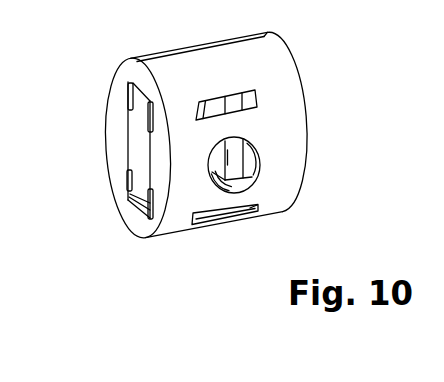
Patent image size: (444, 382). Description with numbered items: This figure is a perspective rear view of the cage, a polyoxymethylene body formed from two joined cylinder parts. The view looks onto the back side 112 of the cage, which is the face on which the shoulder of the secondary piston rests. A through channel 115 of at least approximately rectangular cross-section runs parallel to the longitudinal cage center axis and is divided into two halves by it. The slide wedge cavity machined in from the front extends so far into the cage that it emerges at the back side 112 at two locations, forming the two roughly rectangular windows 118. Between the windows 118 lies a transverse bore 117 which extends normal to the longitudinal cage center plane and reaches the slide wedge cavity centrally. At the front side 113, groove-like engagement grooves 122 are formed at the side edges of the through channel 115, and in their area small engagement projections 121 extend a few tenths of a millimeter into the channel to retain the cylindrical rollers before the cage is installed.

The back side 112 is at (275, 132).
The front side 113 is at (122, 143).
The through channel 115 is at (130, 198).
The transverse bore 117 is at (250, 170).
The rectangular windows 118 is at (257, 101).
The engagement projections 121 is at (142, 191).
The engagement grooves 122 is at (131, 179).